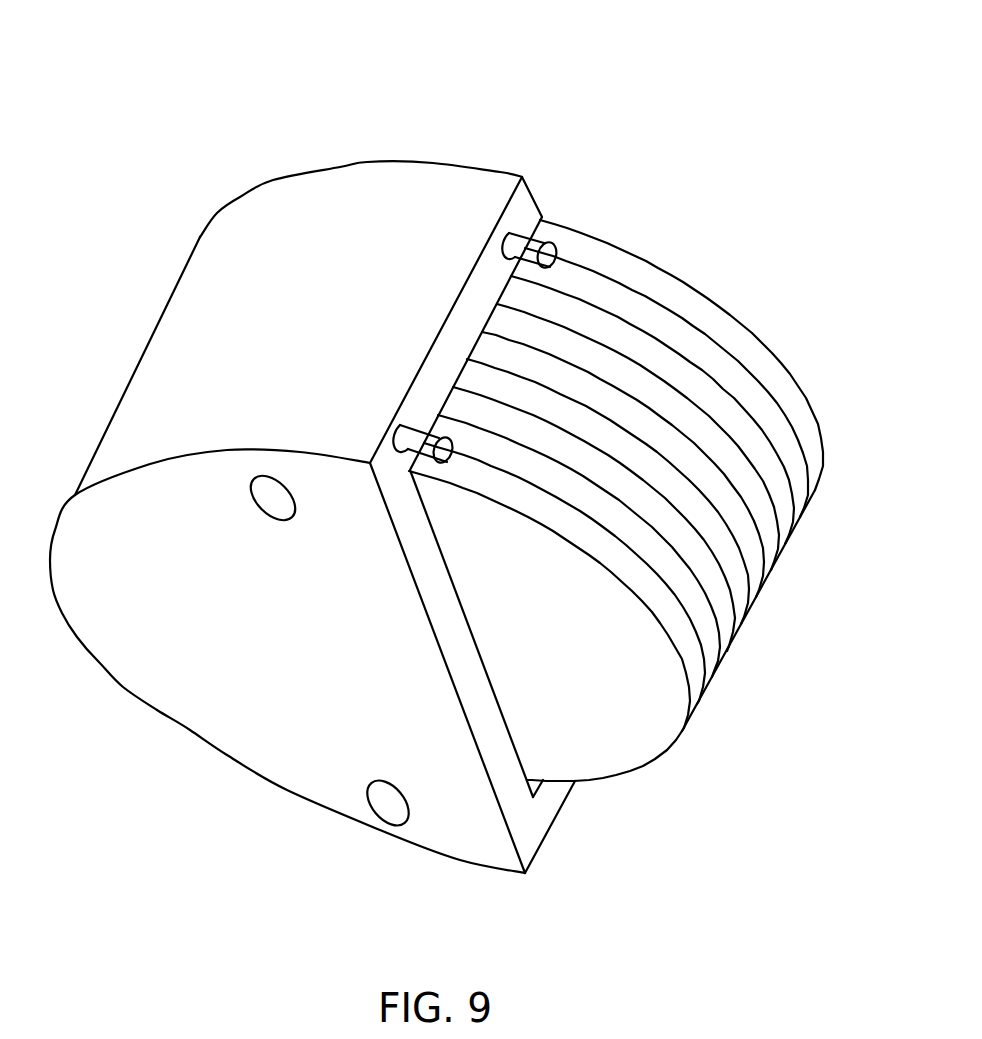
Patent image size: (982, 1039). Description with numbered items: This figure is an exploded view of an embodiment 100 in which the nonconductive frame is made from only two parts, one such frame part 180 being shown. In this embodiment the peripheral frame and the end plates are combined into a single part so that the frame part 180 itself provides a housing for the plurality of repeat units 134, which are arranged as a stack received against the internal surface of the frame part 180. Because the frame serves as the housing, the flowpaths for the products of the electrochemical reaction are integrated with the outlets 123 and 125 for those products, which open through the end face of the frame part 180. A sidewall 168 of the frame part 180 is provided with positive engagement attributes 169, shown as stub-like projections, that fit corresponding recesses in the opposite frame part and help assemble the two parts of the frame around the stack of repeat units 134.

The heat exchanger assembly 100 is at (745, 92).
The frame part 180 is at (152, 370).
The outlet 123 is at (273, 500).
The outlet 125 is at (390, 810).
The sidewall 168 is at (535, 832).
The positive engagement attributes 169 is at (525, 248).
The repeat units 134 is at (832, 462).